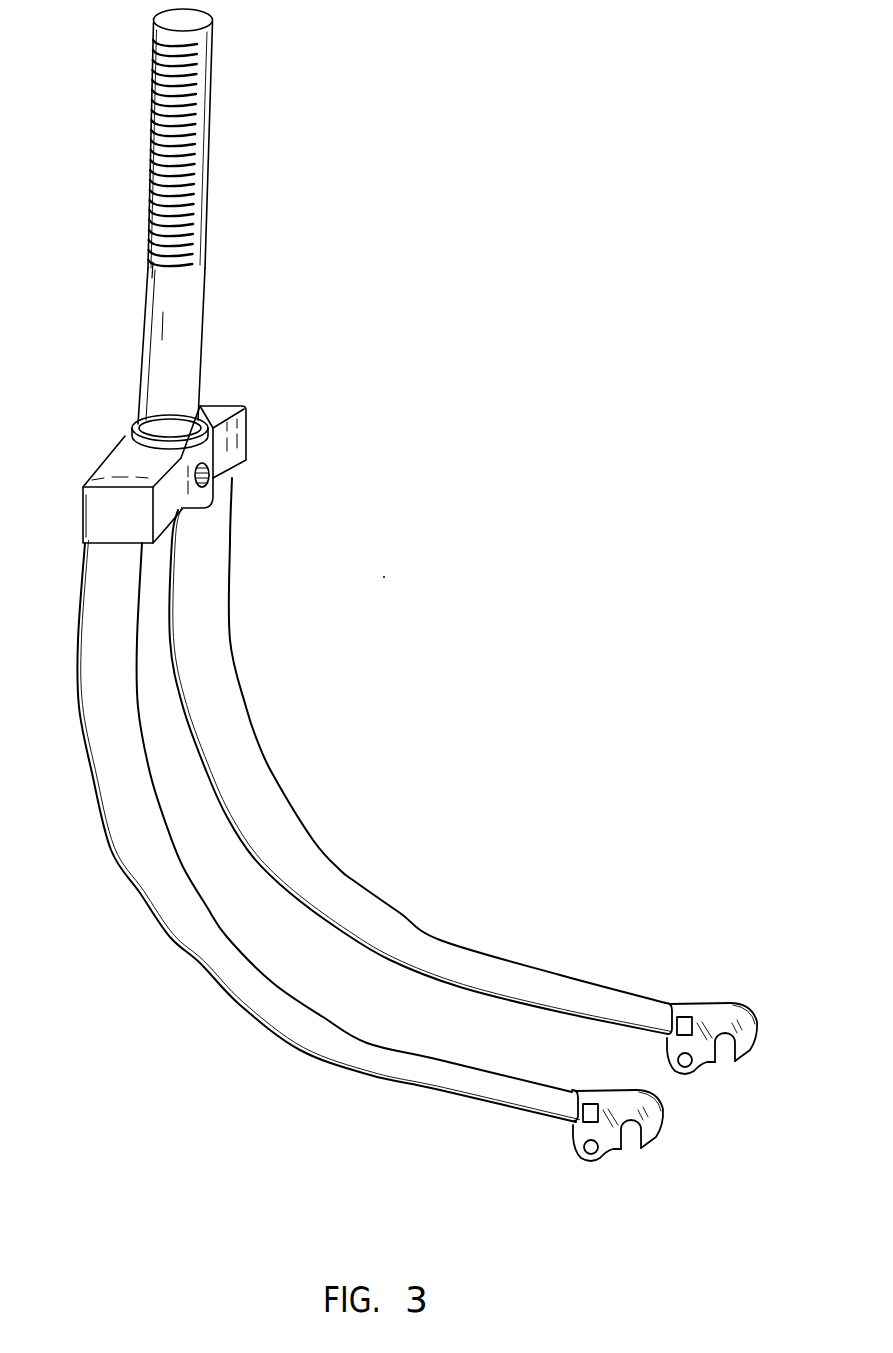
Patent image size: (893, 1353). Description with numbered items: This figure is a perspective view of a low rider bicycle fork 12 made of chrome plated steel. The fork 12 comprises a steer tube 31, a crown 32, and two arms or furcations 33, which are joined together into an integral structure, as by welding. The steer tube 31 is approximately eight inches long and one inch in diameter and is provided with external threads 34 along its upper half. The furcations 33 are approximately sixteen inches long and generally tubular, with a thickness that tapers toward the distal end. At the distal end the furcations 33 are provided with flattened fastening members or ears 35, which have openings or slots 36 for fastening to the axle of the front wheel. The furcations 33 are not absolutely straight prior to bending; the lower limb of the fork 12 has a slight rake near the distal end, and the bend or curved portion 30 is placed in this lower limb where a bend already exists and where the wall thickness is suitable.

The bicycle fork 12 is at (536, 508).
The bend or curved portion 30 is at (275, 822).
The steer tube 31 is at (178, 328).
The crown 32 is at (140, 470).
The arms or furcations 33 is at (443, 958).
The external threads 34 is at (198, 95).
The flattened fastening members or ears 35 is at (715, 1017).
The openings or slots 36 is at (732, 1057).